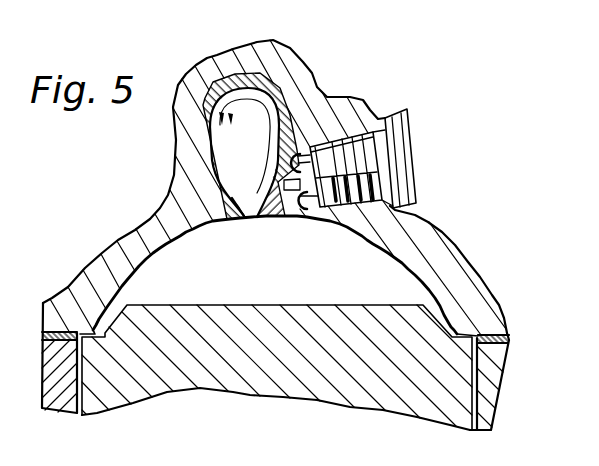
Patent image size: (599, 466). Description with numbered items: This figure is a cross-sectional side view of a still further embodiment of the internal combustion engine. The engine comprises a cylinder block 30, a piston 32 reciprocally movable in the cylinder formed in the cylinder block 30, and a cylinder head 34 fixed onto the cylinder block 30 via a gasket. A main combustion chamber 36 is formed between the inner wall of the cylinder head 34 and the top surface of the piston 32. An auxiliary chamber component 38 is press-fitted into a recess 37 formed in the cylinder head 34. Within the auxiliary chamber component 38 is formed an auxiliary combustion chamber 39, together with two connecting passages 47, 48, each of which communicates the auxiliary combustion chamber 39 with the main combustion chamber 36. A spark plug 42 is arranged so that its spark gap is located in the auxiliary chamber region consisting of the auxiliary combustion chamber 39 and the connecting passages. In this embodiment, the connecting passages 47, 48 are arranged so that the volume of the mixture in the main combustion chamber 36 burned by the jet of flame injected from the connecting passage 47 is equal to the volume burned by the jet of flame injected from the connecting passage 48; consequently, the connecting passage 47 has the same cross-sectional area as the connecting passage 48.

The cylinder block 30 is at (494, 380).
The piston 32 is at (283, 372).
The cylinder head 34 is at (165, 210).
The main combustion chamber 36 is at (202, 295).
The recess 37 is at (288, 102).
The auxiliary chamber component 38 is at (247, 77).
The auxiliary combustion chamber 39 is at (257, 156).
The spark plug 42 is at (338, 175).
The connecting passage 47 is at (295, 214).
The connecting passage 48 is at (240, 217).